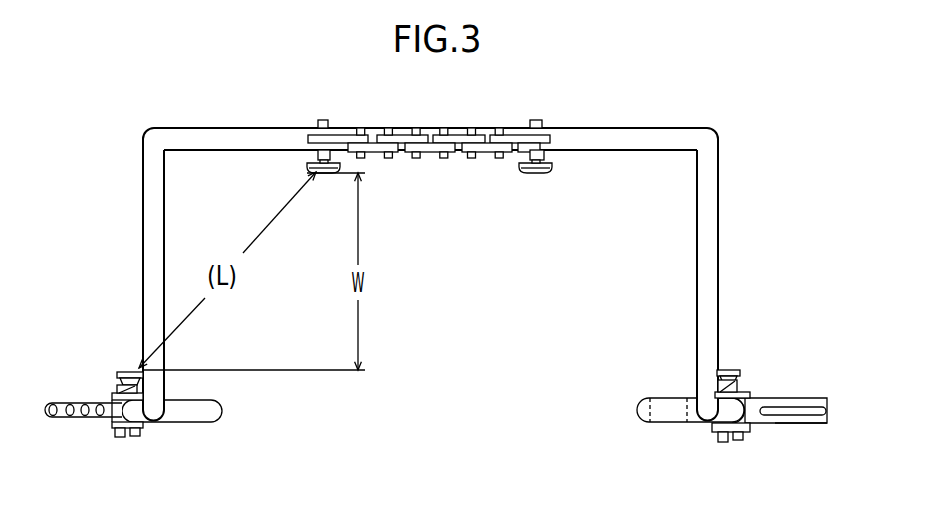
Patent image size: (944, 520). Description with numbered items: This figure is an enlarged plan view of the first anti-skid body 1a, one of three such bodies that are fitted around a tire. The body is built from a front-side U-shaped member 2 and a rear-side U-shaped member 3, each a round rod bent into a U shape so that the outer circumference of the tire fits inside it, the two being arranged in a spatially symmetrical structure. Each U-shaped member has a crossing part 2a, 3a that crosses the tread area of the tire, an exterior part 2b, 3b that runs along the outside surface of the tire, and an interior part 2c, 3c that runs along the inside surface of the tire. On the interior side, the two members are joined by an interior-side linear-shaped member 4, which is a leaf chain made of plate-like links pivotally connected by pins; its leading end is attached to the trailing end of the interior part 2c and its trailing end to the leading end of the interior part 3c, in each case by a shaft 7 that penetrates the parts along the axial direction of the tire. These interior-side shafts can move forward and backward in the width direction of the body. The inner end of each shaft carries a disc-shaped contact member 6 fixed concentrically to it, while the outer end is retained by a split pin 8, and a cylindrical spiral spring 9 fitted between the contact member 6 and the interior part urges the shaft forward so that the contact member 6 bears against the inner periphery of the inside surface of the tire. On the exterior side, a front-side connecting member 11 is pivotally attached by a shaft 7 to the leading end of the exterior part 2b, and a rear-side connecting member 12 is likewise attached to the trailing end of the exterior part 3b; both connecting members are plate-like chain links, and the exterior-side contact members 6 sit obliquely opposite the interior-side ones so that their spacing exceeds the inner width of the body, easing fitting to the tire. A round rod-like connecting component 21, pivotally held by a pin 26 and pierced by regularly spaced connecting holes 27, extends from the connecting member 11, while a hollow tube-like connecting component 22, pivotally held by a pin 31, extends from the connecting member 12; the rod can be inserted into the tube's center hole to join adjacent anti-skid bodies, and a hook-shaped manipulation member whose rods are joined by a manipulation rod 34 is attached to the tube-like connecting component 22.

The first anti-skid body 1a is at (428, 420).
The front-side U-shaped member 2 is at (257, 241).
The crossing part 2a is at (142, 248).
The exterior part 2b is at (225, 415).
The interior part 2c is at (215, 150).
The rear-side U-shaped member 3 is at (574, 241).
The crossing part 3a is at (696, 275).
The exterior part 3b is at (635, 415).
The interior part 3c is at (643, 150).
The interior-side linear-shaped member 4 is at (428, 152).
The contact member 6 is at (323, 174).
The shaft 7 is at (320, 118).
The split pin 8 is at (328, 120).
The spiral spring 9 is at (316, 157).
The front-side connecting member 11 is at (113, 392).
The rear-side connecting member 12 is at (748, 392).
The rod-like connecting component 21 is at (84, 405).
The tube-like connecting component 22 is at (808, 398).
The pin 26 is at (115, 432).
The connecting holes 27 is at (83, 418).
The pin 31 is at (742, 440).
The manipulation rod 34 is at (808, 423).